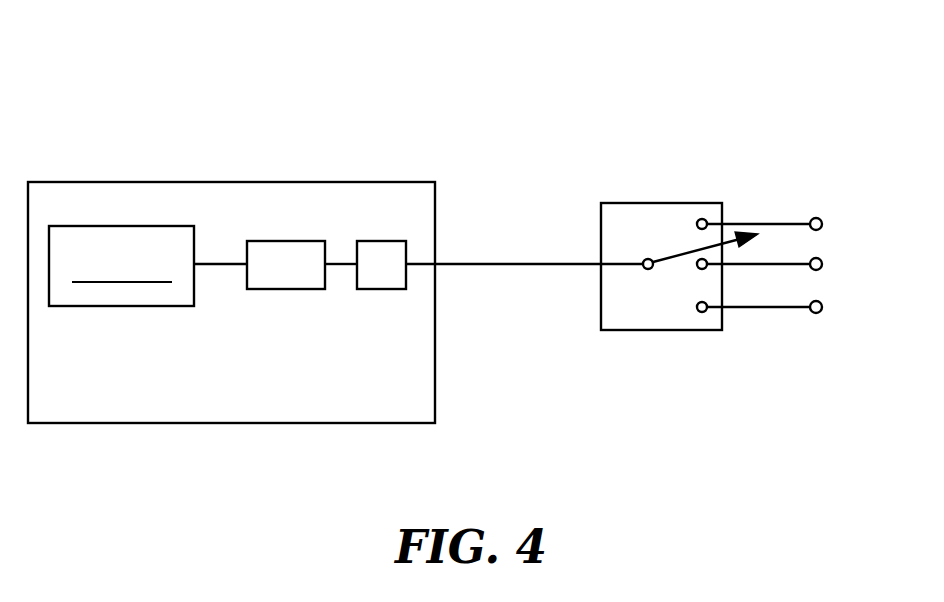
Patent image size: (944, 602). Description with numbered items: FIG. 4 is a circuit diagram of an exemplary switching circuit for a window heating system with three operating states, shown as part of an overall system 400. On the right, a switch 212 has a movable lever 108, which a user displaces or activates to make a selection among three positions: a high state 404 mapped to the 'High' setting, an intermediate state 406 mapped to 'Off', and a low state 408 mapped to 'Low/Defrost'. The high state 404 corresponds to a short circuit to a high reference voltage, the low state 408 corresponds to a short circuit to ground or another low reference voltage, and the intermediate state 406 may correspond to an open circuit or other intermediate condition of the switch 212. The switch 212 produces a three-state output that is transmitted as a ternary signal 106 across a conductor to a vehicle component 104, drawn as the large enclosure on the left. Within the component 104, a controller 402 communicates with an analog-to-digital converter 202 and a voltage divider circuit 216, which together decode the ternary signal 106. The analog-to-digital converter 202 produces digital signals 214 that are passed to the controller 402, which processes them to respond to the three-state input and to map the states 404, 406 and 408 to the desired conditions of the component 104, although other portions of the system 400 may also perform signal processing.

The system 400 is at (641, 88).
The component 104 is at (412, 408).
The controller 402 is at (175, 306).
The digital signals 214 is at (212, 264).
The analog-to-digital converter 202 is at (310, 241).
The voltage divider circuit 216 is at (395, 289).
The ternary signal 106 is at (490, 264).
The switch 212 is at (650, 330).
The lever 108 is at (728, 240).
The high state 404 is at (782, 220).
The intermediate state 406 is at (797, 266).
The low state 408 is at (757, 309).